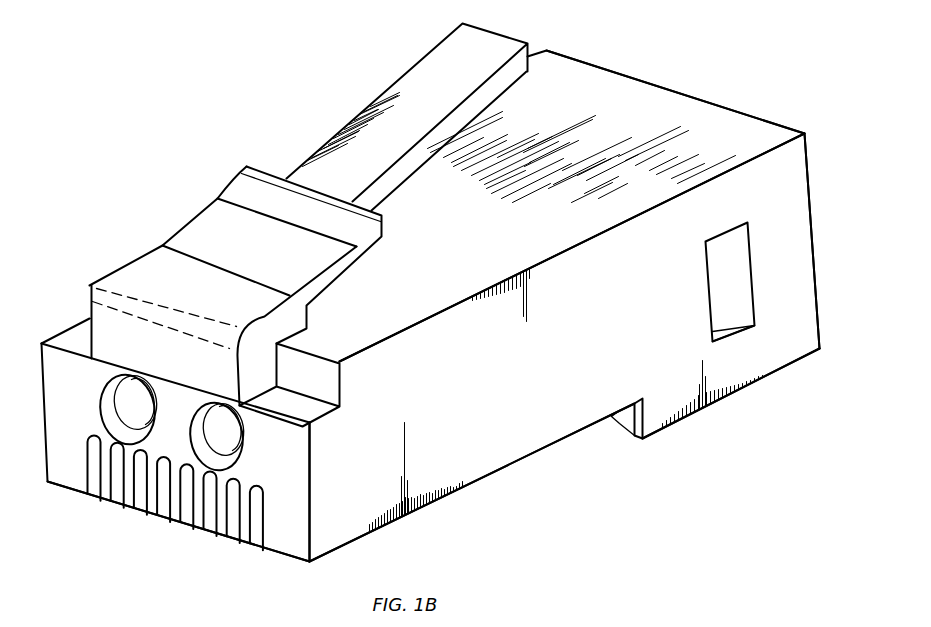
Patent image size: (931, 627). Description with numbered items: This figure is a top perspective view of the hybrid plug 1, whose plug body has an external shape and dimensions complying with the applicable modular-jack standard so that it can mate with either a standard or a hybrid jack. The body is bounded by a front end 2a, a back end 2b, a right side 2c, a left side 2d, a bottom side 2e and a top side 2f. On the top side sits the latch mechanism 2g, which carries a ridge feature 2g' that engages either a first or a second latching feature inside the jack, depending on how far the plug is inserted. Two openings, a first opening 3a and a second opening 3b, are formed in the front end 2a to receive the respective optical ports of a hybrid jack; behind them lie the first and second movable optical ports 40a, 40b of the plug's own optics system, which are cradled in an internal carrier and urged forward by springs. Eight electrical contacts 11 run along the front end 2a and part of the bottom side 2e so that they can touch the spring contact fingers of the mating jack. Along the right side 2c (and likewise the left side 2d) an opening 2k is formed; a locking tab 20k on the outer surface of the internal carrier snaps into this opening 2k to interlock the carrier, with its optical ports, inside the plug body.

The hybrid RJ-45 plug 1 is at (193, 112).
The front end 2a is at (295, 545).
The back end 2b is at (820, 313).
The right side 2c is at (453, 462).
The left side 2d is at (70, 333).
The bottom side 2e is at (562, 443).
The top side 2f is at (625, 98).
The latch mechanism 2g is at (236, 297).
The ridge feature 2g' is at (407, 124).
The locking tab opening 2k is at (727, 338).
The locking tab 20k is at (728, 281).
The first opening 3a is at (102, 387).
The second opening 3b is at (240, 457).
The first movable optical port 40a is at (122, 417).
The second movable optical port 40b is at (217, 450).
The electrical contacts 11 is at (228, 528).